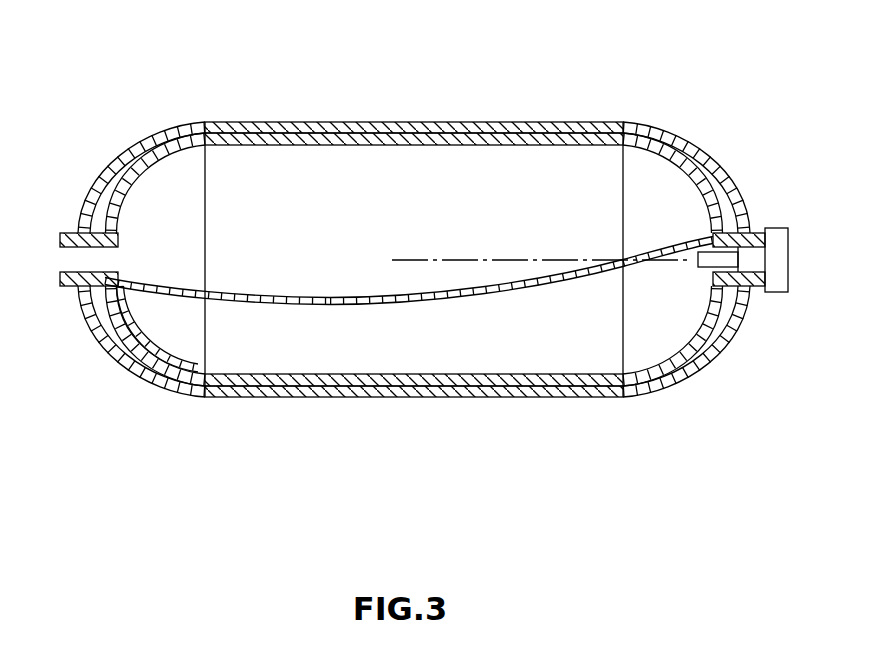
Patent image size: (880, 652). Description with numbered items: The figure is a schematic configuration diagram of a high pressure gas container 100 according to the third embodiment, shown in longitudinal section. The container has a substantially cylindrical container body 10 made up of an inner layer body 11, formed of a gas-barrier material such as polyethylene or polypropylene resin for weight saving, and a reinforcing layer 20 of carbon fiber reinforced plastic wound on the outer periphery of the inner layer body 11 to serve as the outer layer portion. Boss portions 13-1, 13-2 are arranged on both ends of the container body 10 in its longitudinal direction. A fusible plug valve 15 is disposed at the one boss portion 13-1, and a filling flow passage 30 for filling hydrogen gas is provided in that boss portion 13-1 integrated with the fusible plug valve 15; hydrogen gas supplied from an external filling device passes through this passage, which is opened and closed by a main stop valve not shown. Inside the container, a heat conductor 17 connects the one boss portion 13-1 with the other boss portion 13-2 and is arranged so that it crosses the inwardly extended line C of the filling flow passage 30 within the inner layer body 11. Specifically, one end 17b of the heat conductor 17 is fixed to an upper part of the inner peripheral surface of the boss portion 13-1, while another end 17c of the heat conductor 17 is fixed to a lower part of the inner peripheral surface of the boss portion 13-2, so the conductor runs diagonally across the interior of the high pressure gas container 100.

The high pressure gas container 100 is at (423, 233).
The container body 10 is at (414, 206).
The reinforcing layer 20 is at (338, 122).
The inner layer body 11 is at (308, 53).
The boss portion 13-1 is at (753, 287).
The boss portion 13-2 is at (62, 288).
The fusible plug valve 15 is at (777, 280).
The filling flow passage 30 is at (725, 256).
The heat conductor 17 is at (410, 268).
The one end of the heat conductor 17b is at (697, 153).
The another end of the heat conductor 17c is at (118, 362).
The inwardly extended line C is at (565, 258).